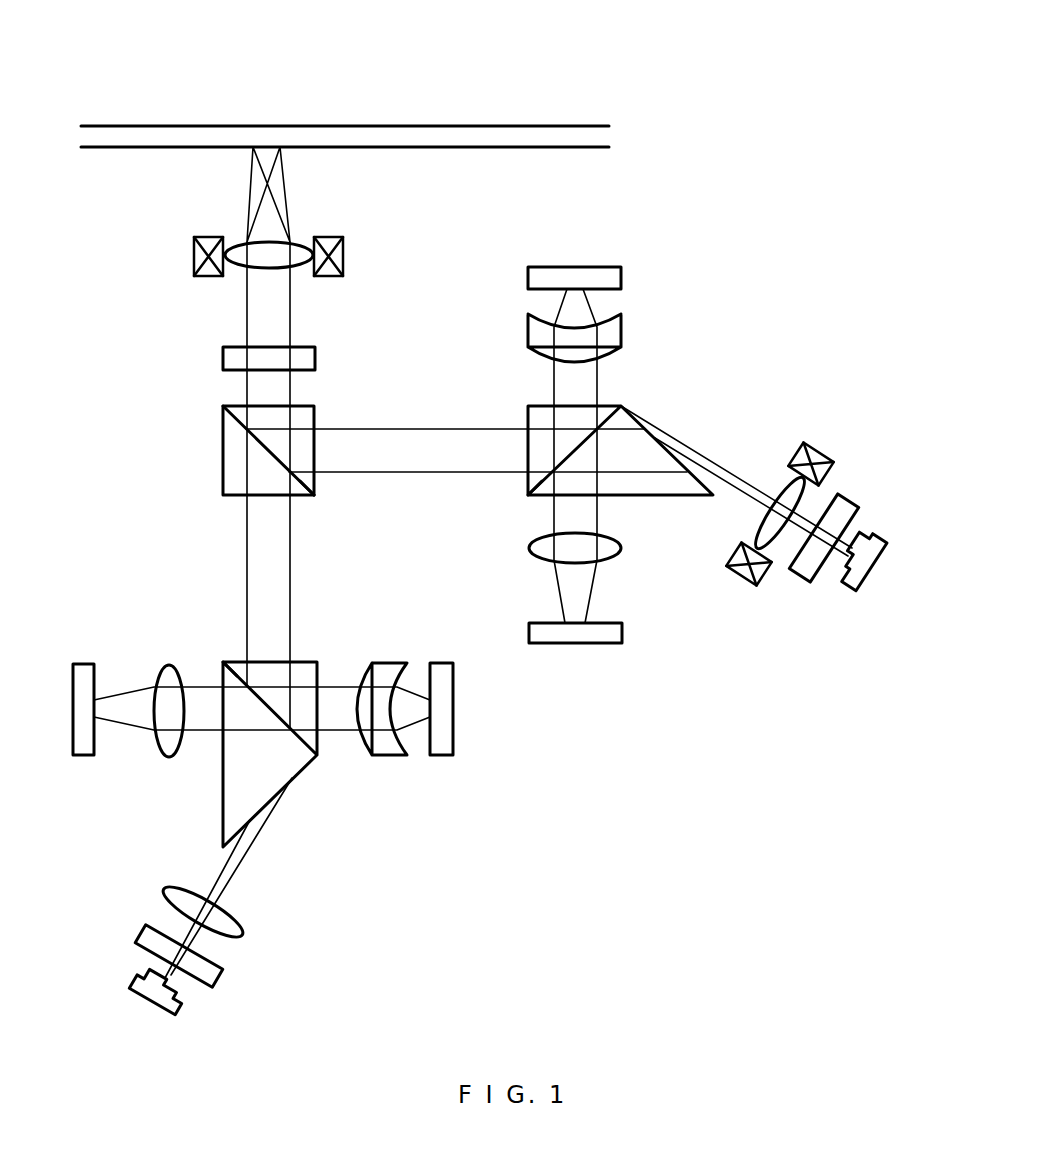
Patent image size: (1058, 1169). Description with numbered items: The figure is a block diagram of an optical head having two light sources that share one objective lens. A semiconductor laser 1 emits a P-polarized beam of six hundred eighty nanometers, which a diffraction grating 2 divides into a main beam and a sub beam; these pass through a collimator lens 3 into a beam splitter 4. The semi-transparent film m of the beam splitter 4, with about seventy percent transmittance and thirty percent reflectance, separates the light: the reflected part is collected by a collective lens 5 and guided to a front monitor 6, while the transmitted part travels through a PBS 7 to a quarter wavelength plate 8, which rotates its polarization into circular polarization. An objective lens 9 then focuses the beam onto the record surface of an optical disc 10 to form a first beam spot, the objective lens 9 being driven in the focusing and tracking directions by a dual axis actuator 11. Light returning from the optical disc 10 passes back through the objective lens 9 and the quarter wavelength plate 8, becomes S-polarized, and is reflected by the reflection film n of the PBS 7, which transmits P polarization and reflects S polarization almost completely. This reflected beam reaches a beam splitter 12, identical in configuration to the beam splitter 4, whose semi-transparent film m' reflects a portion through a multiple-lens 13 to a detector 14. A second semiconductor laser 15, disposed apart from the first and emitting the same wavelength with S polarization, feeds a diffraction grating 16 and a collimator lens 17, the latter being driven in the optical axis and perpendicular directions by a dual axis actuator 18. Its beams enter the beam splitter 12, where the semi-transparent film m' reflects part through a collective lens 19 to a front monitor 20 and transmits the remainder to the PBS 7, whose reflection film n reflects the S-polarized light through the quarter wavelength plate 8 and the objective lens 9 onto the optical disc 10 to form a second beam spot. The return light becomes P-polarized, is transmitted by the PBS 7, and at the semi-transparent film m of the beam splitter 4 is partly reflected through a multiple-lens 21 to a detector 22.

The semiconductor laser 1 is at (124, 985).
The diffraction grating 2 is at (140, 928).
The collimator lens 3 is at (247, 933).
The beam splitter 4 is at (317, 757).
The collective lens 5 is at (172, 757).
The front monitor 6 is at (84, 757).
The PBS (Polarization Beam Splitter) 7 is at (223, 458).
The 1/4 wavelength plate 8 is at (223, 360).
The objective lens 9 is at (296, 242).
The optical disc 10 is at (525, 133).
The dual axis actuator 11 is at (194, 260).
The beam splitter 12 is at (632, 412).
The multiple-lens 13 is at (621, 335).
The detector 14 is at (610, 267).
The semiconductor laser 15 is at (873, 533).
The diffraction grating 16 is at (852, 500).
The collimator lens 17 is at (783, 474).
The dual axis actuator 18 is at (820, 453).
The collective lens 19 is at (622, 548).
The front monitor 20 is at (622, 632).
The multiple-lens 21 is at (403, 757).
The detector 22 is at (455, 727).
The semi-transparent film m is at (194, 646).
The reflection film n is at (313, 482).
The semi-transparent film m' is at (508, 520).